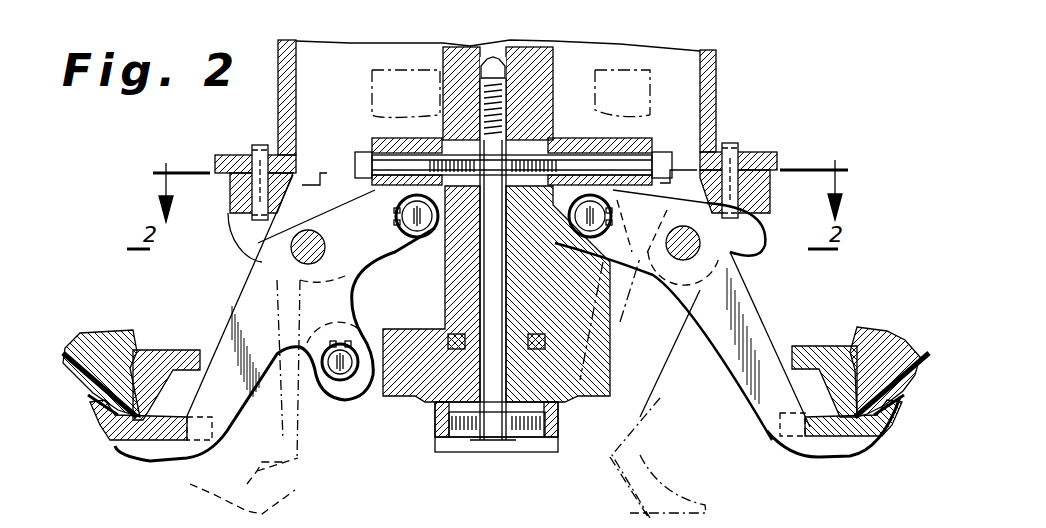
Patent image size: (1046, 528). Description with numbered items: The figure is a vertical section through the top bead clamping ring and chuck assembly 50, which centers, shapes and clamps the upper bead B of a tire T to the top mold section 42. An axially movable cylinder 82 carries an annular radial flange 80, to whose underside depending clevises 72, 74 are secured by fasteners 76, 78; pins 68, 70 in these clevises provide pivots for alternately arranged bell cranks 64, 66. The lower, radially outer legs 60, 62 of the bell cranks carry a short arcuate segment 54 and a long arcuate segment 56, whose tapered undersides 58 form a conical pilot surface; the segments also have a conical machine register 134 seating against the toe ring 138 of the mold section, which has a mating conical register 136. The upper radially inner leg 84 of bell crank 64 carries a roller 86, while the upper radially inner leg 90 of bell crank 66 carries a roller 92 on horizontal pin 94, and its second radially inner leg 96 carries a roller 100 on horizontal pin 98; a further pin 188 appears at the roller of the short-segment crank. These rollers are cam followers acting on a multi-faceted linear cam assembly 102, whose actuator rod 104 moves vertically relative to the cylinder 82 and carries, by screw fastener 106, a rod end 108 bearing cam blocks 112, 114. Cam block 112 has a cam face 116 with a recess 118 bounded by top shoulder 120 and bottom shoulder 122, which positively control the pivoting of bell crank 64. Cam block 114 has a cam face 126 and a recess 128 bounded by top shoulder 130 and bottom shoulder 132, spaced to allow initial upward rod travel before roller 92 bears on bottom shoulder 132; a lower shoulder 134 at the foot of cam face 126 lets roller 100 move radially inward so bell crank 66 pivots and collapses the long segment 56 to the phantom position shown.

The top bead clamping ring and chuck assembly 50 is at (730, 65).
The cylinder 82 is at (285, 40).
The actuator rod 104 is at (553, 68).
The screw fastener 106 is at (487, 441).
The roller 86 is at (652, 140).
The top shoulder 130 is at (375, 140).
The top shoulder 120 is at (660, 183).
The clevis 74 is at (230, 196).
The fastener 78 is at (258, 145).
The annular radial flange 80 is at (777, 158).
The clevis 72 is at (770, 213).
The fastener 76 is at (732, 143).
The recess 118 is at (538, 247).
The bottom shoulder 132 is at (392, 329).
The cam block 114 is at (432, 410).
The rod end 108 is at (585, 410).
The cam block 112 is at (560, 415).
The cam face 116 is at (610, 374).
The cam face 126 is at (392, 398).
The lower shoulder 134 is at (396, 420).
The multi-faceted linear cam assembly 102 is at (470, 460).
The horizontal pin 94 is at (398, 232).
The pin 188 is at (611, 216).
The horizontal pin 98 is at (328, 372).
The second radially inner leg 96 is at (330, 347).
The roller 100 is at (340, 381).
The roller 92 is at (400, 255).
The recess 128 is at (428, 255).
The pin 70 is at (291, 246).
The bell crank 66 is at (233, 306).
The upper radially inner leg 90 is at (352, 280).
The lower radially outer leg 62 is at (203, 449).
The pin 68 is at (700, 250).
The upper radially inner leg 84 is at (632, 262).
The bottom shoulder 122 is at (618, 300).
The lower radially outer leg 60 is at (767, 431).
The bell crank 64 is at (704, 352).
The top mold section 42 is at (98, 333).
The toe ring 138 is at (163, 350).
The mating conical register 136 is at (163, 372).
The long arcuate segment 56 is at (110, 434).
The tapered underside 58 is at (118, 446).
The bead B is at (110, 404).
The tire T is at (70, 393).
The short arcuate segment 54 is at (887, 437).